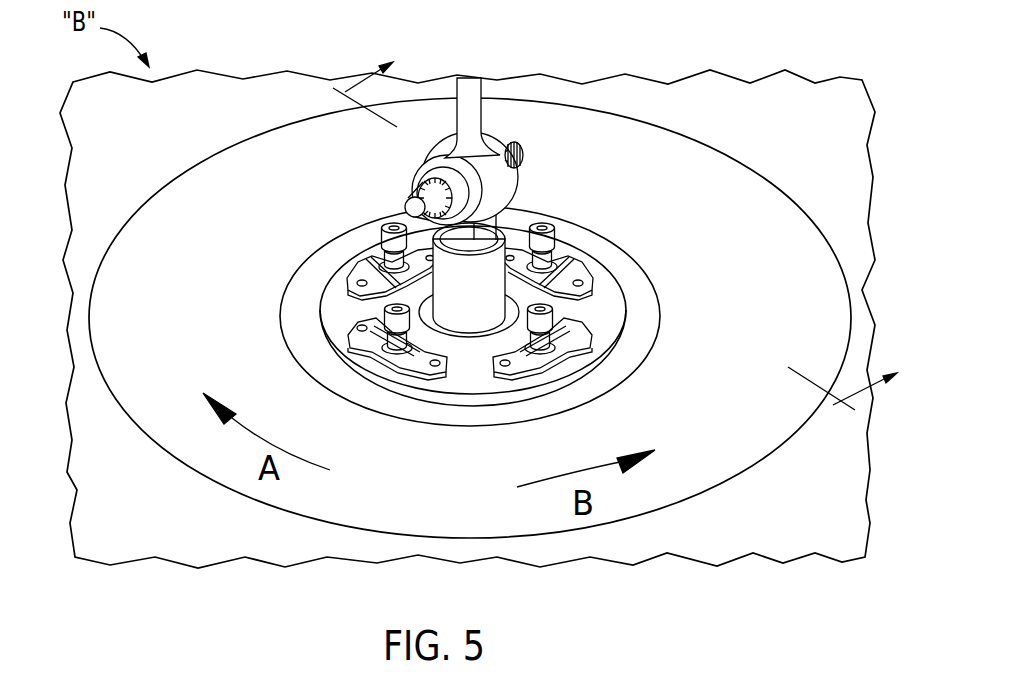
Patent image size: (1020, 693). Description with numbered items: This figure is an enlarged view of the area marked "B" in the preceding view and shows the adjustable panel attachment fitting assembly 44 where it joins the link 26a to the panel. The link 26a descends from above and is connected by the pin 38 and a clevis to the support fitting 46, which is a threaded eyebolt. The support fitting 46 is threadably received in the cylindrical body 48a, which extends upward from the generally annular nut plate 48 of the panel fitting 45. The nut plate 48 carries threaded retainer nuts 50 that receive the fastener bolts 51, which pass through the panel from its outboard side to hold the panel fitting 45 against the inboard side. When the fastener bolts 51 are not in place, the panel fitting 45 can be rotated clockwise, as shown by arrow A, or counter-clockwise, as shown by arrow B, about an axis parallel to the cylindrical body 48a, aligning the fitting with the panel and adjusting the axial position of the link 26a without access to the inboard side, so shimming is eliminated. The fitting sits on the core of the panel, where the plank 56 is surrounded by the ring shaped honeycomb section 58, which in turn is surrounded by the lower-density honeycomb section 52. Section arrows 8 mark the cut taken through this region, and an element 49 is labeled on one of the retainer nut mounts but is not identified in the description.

The section view direction of FIG. 8 is at (625, 221).
The link 26a is at (470, 90).
The pin 38 is at (518, 148).
The adjustable panel attachment fitting assembly 44 is at (484, 261).
The panel fitting 45 is at (608, 274).
The support fitting 46 is at (482, 277).
The nut plate 48 is at (440, 294).
The cylindrical body 48a is at (513, 247).
The bracket 49 is at (543, 340).
The threaded retainer nuts 50 is at (548, 338).
The fastener bolts 51 is at (560, 305).
The honeycomb section 52 is at (118, 455).
The plank 56 is at (603, 375).
The ring shaped honeycomb section 58 is at (125, 308).